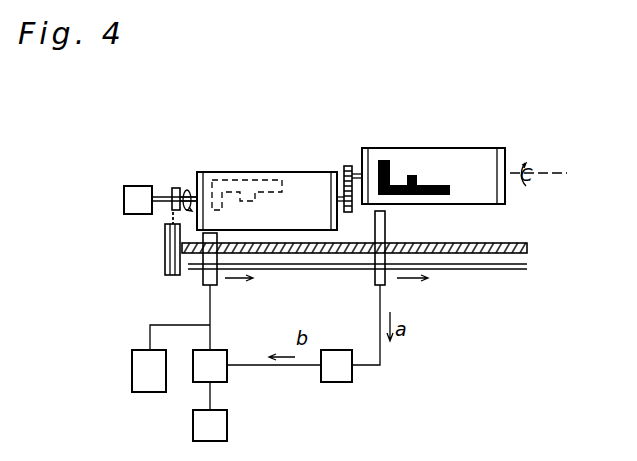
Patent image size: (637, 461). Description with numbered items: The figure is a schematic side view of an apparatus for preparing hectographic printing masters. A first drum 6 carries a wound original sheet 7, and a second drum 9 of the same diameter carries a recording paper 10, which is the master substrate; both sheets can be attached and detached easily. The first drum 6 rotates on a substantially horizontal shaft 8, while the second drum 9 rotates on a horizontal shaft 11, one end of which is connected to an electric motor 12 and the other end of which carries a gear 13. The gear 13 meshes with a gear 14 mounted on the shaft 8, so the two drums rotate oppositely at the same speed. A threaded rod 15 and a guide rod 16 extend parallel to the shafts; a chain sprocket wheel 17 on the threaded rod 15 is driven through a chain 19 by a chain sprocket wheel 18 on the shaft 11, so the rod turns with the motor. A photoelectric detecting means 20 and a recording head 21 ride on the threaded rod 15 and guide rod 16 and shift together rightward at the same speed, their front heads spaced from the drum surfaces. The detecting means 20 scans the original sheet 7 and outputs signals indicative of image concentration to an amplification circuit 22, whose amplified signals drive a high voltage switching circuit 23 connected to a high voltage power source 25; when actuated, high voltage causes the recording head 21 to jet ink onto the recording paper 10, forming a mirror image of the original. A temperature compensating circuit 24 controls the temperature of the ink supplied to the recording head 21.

The first drum 6 is at (503, 160).
The original sheet 7 is at (474, 160).
The shaft 8 is at (357, 172).
The second drum 9 is at (192, 192).
The recording paper 10 is at (302, 183).
The shaft 11 is at (182, 194).
The electric motor 12 is at (124, 200).
The gear 13 is at (350, 213).
The gear 14 is at (349, 165).
The threaded rod 15 is at (527, 247).
The guide rod 16 is at (527, 267).
The chain sprocket wheel 17 is at (165, 265).
The chain sprocket wheel 18 is at (176, 188).
The chain 19 is at (171, 219).
The photoelectric detecting means 20 is at (385, 281).
The recording head 21 is at (205, 277).
The amplification circuit 22 is at (337, 382).
The high voltage switching circuit 23 is at (227, 370).
The temperature compensating circuit 24 is at (132, 373).
The high voltage power source 25 is at (193, 425).